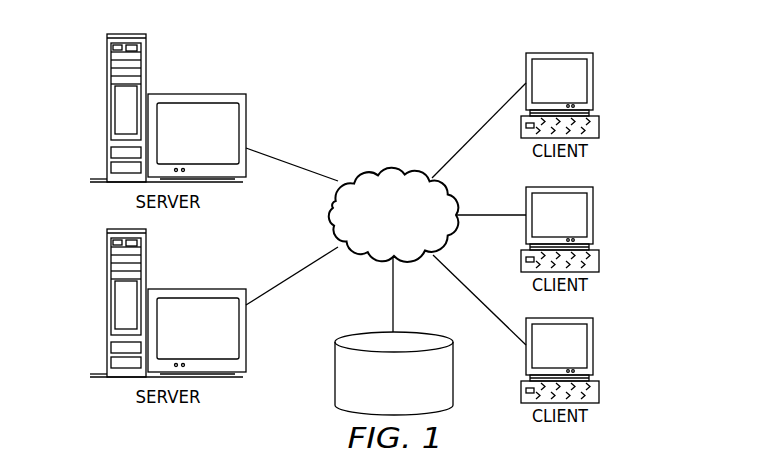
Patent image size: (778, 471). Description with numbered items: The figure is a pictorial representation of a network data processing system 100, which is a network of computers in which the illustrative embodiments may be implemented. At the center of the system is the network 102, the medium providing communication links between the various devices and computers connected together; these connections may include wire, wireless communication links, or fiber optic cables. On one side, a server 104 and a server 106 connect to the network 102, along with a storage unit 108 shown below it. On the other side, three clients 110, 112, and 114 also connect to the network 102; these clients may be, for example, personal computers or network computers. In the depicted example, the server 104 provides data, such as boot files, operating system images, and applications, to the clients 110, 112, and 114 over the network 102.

The network data processing system 100 is at (443, 70).
The network 102 is at (367, 172).
The server 104 is at (107, 109).
The server 106 is at (107, 305).
The storage unit 108 is at (335, 378).
The client 110 is at (593, 83).
The client 112 is at (593, 216).
The client 114 is at (593, 345).